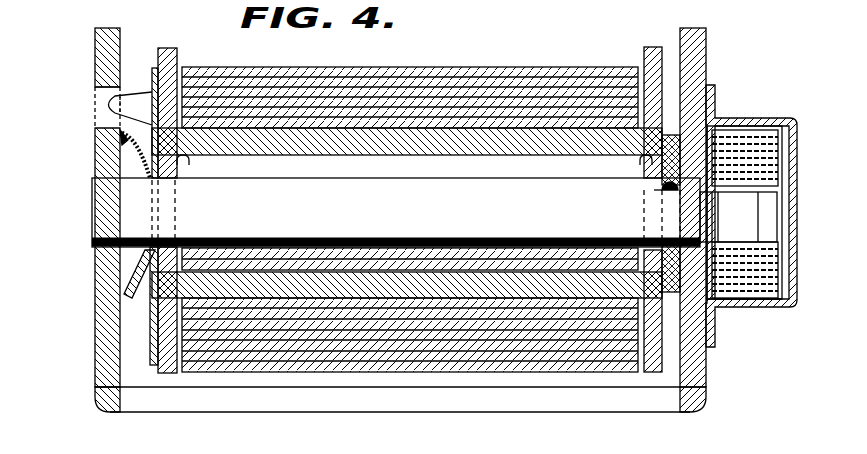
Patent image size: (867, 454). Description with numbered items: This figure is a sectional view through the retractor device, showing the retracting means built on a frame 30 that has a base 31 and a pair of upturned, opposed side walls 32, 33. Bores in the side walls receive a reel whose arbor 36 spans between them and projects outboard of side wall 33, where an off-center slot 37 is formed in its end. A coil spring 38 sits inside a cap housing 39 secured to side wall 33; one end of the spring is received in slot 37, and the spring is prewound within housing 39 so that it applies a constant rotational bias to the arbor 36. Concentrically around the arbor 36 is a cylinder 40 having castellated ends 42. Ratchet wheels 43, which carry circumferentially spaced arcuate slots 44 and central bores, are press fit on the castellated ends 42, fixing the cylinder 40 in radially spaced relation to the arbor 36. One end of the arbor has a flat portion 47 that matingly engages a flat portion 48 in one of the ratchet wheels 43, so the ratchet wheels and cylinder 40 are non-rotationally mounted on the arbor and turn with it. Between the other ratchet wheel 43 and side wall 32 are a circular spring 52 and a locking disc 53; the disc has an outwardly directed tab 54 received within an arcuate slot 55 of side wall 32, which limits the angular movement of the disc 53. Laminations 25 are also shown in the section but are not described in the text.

The laminated stator core 25 is at (492, 96).
The frame 30 is at (403, 234).
The base 31 is at (192, 400).
The side wall 32 is at (97, 165).
The side wall 33 is at (706, 48).
The arbor 36 is at (434, 212).
The off-center slot 37 is at (752, 223).
The coil spring 38 is at (760, 305).
The cap housing 39 is at (720, 307).
The cylinder 40 is at (272, 150).
The castellated ends 42 is at (670, 135).
The ratchet wheels 43 is at (178, 62).
The arcuate slots 44 is at (188, 160).
The flat portion 47 is at (670, 195).
The flat portion 48 is at (654, 190).
The circular spring 52 is at (135, 270).
The locking disc 53 is at (150, 340).
The tab 54 is at (133, 100).
The arcuate slot 55 is at (98, 96).